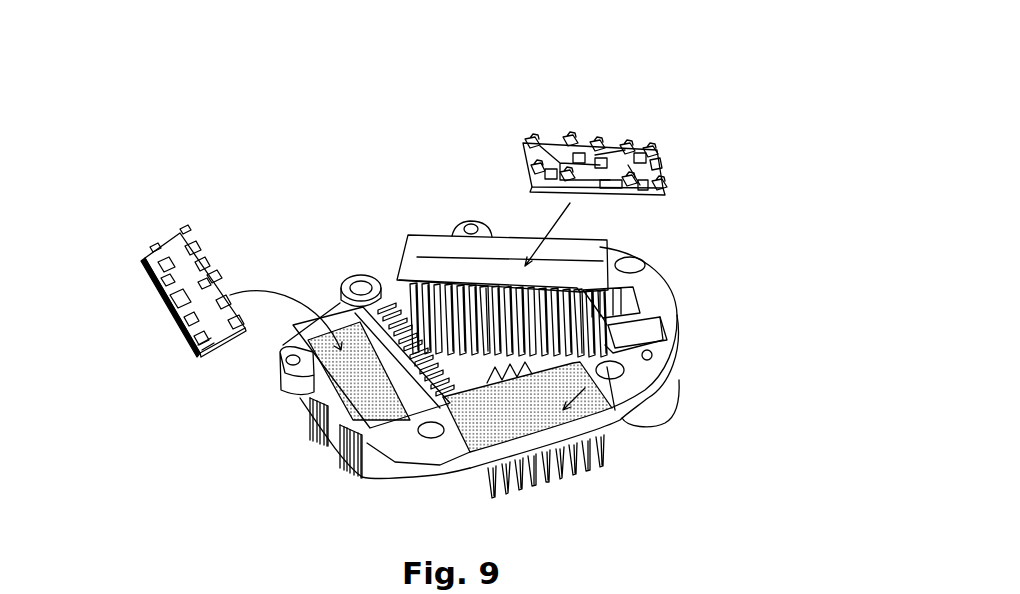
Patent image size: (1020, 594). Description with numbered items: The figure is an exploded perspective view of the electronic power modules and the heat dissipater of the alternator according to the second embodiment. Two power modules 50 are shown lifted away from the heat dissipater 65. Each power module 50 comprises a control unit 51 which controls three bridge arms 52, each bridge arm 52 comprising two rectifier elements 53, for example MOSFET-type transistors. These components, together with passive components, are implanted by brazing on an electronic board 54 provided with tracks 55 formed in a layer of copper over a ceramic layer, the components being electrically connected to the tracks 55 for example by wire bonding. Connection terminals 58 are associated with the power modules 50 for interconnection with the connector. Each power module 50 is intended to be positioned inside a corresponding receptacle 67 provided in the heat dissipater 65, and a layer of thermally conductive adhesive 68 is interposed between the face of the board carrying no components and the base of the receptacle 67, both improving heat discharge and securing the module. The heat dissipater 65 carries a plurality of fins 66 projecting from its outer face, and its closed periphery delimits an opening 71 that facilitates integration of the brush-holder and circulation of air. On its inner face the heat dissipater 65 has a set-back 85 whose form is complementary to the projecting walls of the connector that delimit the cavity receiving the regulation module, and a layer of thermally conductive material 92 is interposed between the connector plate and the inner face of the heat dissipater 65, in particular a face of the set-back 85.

The power module 50 is at (415, 198).
The control unit 51 is at (170, 292).
The bridge arm 52 is at (514, 138).
The rectifier element 53 is at (216, 272).
The electronic board 54 is at (205, 352).
The tracks 55 is at (558, 148).
The connection terminal 58 is at (184, 232).
The heat dissipater 65 is at (390, 440).
The fins 66 is at (603, 466).
The receptacle 67 is at (563, 277).
The layer of thermally conductive adhesive 68 is at (313, 407).
The opening 71 is at (557, 350).
The set-back 85 is at (623, 395).
The layer of thermally conductive material 92 is at (523, 437).